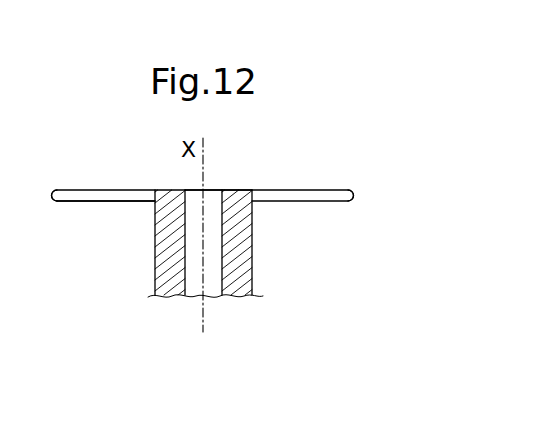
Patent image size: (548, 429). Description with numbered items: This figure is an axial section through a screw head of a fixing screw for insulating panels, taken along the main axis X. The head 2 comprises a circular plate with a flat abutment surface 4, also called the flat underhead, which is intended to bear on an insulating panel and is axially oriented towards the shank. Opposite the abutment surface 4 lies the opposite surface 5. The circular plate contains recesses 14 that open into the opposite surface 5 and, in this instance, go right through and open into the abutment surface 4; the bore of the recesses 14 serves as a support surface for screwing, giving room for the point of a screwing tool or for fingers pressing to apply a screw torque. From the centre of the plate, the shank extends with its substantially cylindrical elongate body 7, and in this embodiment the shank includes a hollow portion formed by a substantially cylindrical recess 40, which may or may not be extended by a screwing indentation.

The head 2 is at (318, 140).
The flat abutment surface 4 is at (58, 202).
The opposite surface 5 is at (237, 190).
The elongate body 7 is at (243, 247).
The recesses 14 is at (110, 190).
The cylindrical recess 40 is at (220, 283).